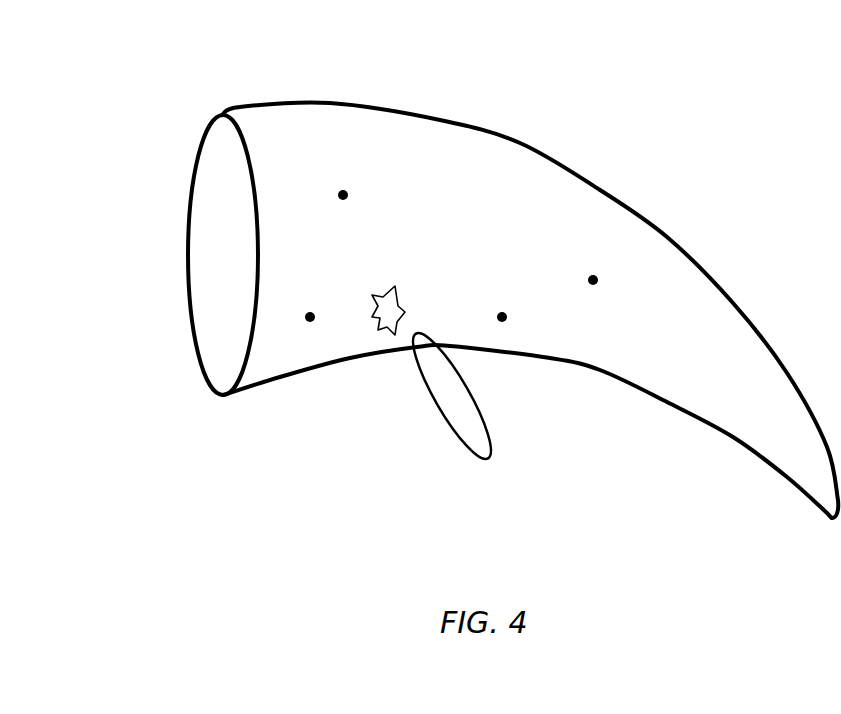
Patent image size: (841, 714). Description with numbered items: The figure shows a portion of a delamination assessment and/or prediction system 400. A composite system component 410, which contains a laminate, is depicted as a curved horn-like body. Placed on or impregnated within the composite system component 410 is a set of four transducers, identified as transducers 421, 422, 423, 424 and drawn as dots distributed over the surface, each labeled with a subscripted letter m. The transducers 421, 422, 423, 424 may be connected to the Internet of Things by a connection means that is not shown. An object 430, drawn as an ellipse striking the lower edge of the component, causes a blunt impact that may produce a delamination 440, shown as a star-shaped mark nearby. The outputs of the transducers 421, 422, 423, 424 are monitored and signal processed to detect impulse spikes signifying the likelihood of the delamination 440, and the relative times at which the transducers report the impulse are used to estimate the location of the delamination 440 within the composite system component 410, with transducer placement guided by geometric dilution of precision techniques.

The delamination assessment and/or prediction system 400 is at (143, 74).
The composite system component 410 is at (440, 120).
The transducer m1 421 is at (305, 317).
The transducer m2 422 is at (338, 193).
The transducer m3 423 is at (598, 280).
The transducer m4 424 is at (507, 319).
The object 430 is at (447, 423).
The delamination 440 is at (375, 327).